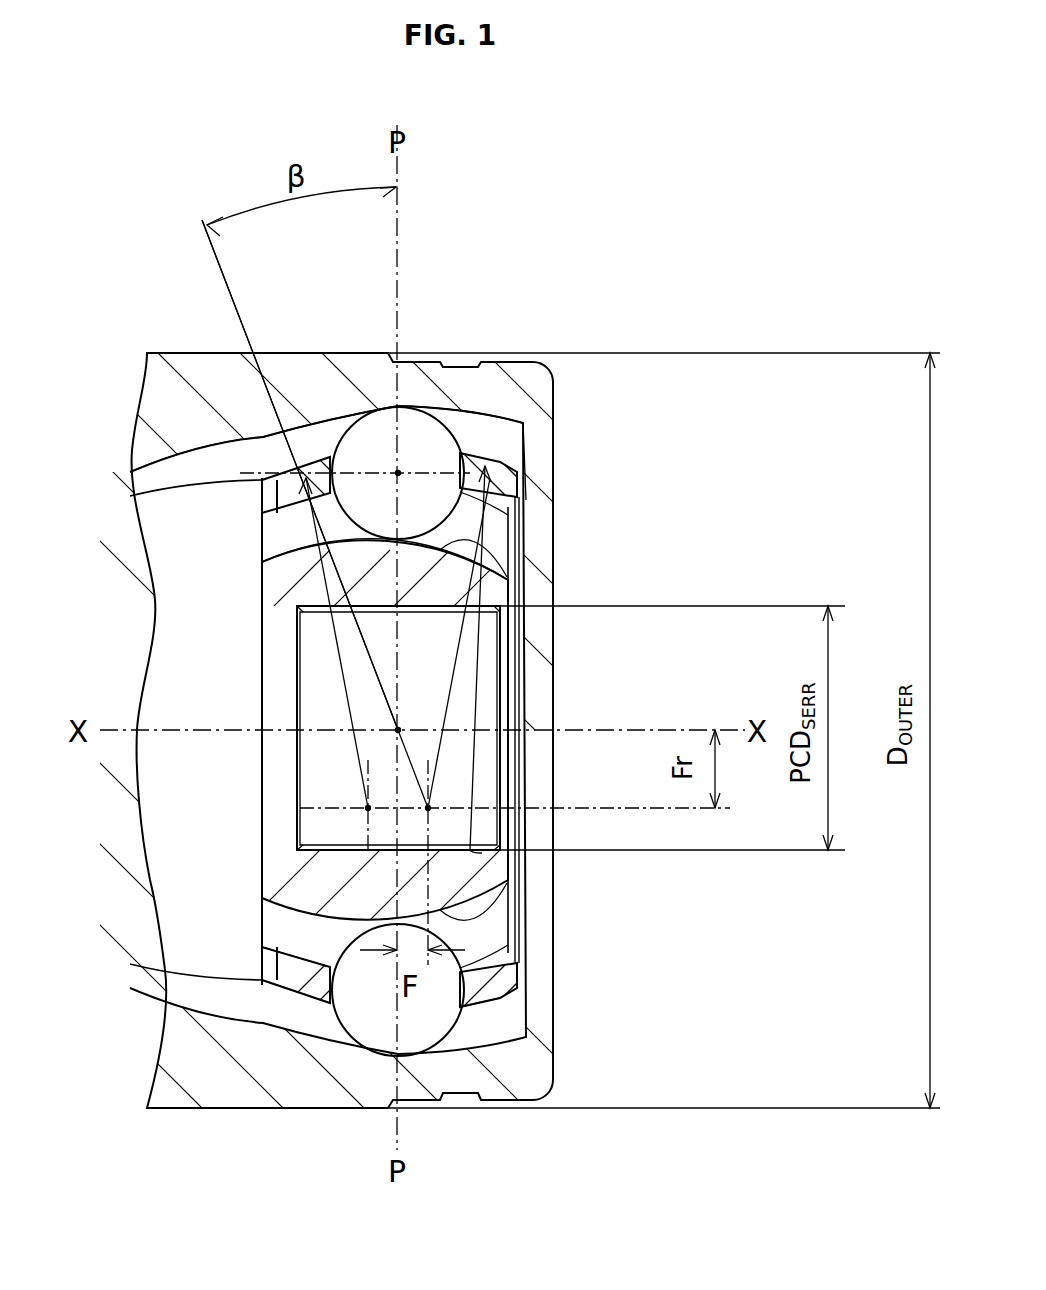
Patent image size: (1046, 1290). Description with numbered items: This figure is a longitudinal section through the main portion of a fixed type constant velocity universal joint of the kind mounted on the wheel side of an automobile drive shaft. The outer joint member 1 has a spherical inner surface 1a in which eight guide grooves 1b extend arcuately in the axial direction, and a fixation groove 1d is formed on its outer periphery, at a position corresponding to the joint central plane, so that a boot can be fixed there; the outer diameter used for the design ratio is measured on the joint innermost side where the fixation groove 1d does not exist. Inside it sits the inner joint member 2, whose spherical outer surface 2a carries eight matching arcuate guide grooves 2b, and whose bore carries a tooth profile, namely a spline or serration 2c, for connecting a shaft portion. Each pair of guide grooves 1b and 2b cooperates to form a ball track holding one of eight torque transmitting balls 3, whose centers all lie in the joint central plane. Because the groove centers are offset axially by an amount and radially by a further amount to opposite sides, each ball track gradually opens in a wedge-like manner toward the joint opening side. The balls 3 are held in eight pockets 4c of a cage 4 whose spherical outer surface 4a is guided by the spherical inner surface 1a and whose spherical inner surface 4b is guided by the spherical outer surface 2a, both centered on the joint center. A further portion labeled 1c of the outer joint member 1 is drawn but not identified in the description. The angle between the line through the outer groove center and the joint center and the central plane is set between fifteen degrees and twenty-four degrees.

The outer joint member 1 is at (160, 393).
The spherical inner surface 1a is at (268, 470).
The guide grooves 1b is at (314, 420).
The mouth portion of outer joint member 1c is at (520, 445).
The fixation groove 1d is at (414, 402).
The inner joint member 2 is at (268, 552).
The spherical outer surface 2a is at (492, 481).
The guide grooves 2b is at (470, 545).
The tooth profile (spline or serration) 2c is at (322, 632).
The torque transmitting balls 3 is at (385, 430).
The cage 4 is at (490, 452).
The spherical outer surface 4a is at (263, 1023).
The spherical inner surface 4b is at (262, 923).
The pockets 4c is at (520, 1033).